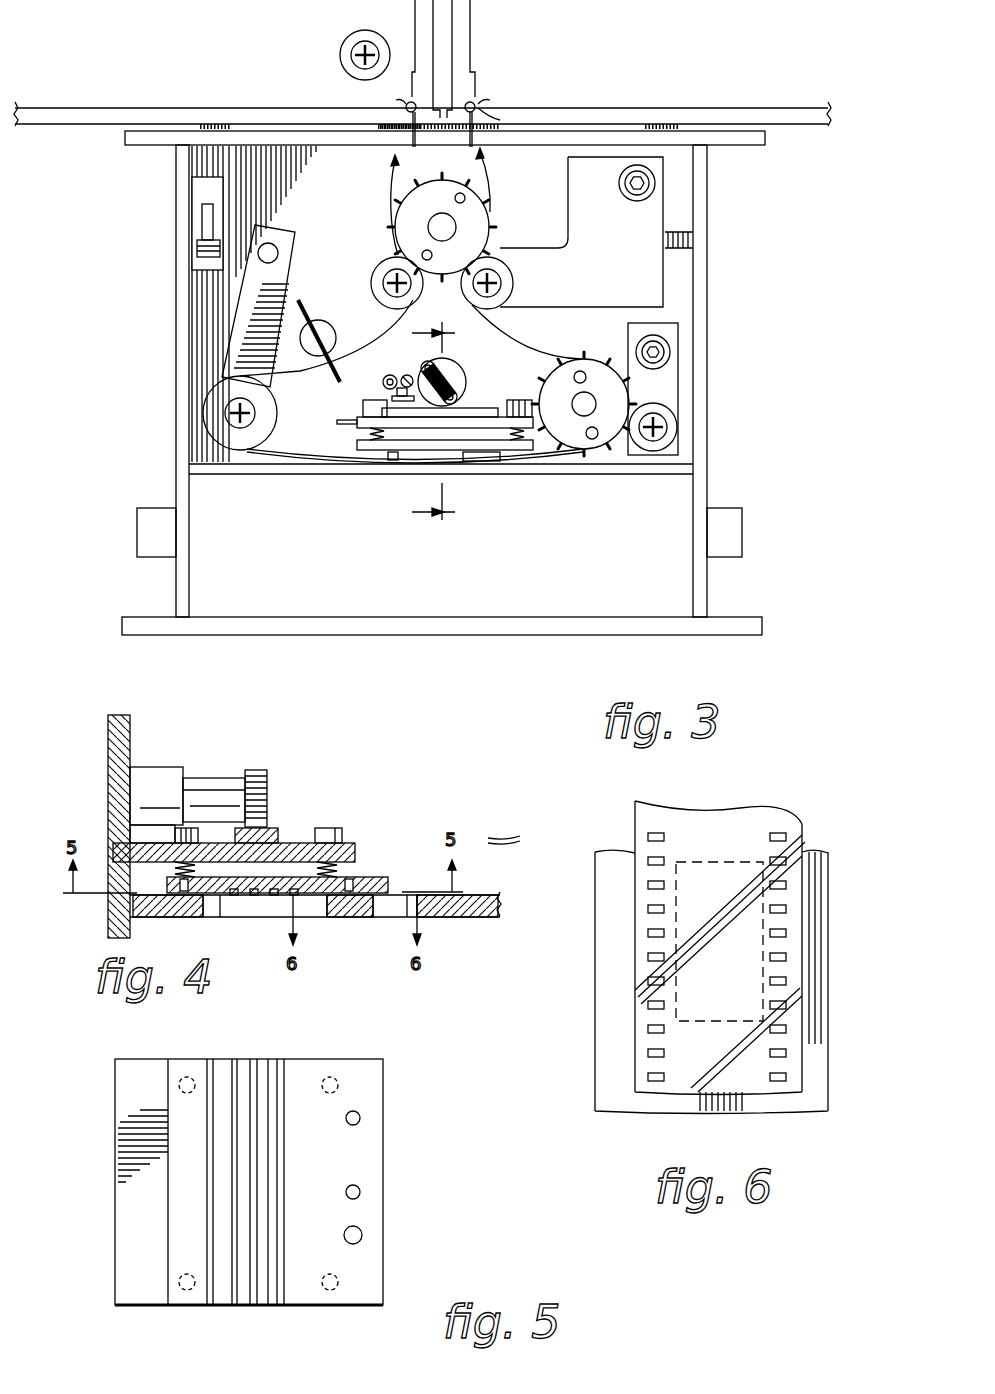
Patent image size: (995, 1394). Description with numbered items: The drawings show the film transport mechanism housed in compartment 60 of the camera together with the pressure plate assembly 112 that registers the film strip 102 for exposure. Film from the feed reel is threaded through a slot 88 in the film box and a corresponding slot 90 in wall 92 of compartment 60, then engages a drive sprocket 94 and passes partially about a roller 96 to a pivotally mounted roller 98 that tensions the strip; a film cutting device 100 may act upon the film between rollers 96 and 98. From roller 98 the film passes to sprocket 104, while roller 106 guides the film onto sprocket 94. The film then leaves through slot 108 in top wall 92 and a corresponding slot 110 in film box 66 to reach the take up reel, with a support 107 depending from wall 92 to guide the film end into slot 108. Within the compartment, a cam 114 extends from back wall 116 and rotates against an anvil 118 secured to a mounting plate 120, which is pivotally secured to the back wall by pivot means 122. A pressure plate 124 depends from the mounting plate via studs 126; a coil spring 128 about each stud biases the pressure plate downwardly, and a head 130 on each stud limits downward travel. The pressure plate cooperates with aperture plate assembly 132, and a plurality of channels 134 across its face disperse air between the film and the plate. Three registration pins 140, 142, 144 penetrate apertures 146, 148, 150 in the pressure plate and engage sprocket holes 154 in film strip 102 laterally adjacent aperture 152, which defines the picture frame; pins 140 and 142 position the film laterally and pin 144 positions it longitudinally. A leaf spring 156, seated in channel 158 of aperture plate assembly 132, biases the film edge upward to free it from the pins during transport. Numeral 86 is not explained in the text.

In FIG. 3, the compartment 60 is at (722, 320).
In FIG. 3, the film box 66 is at (797, 127).
In FIG. 3, the screw 86 is at (341, 47).
In FIG. 3, the slot 88 is at (408, 112).
In FIG. 3, the slot 90 is at (410, 143).
In FIG. 3, the wall 92 is at (556, 137).
In FIG. 3, the drive sprocket 94 is at (418, 200).
In FIG. 3, the roller 96 is at (378, 266).
In FIG. 3, the roller 98 is at (248, 440).
In FIG. 3, the film cutting device 100 is at (340, 372).
In FIG. 3, the sprocket 104 is at (573, 440).
In FIG. 3, the roller 106 is at (510, 289).
In FIG. 3, the support 107 is at (370, 352).
In FIG. 3, the slot 108 is at (500, 122).
In FIG. 3, the slot 110 is at (480, 106).
In FIG. 3, the pressure plate assembly 112 is at (476, 396).
In FIG. 4, the pressure plate assembly 112 is at (507, 830).
In FIG. 3, the cam 114 is at (470, 364).
In FIG. 4, the cam 114 is at (253, 770).
In FIG. 4, the back wall 116 is at (130, 737).
In FIG. 4, the anvil 118 is at (278, 828).
In FIG. 4, the mounting plate 120 is at (352, 847).
In FIG. 5, the mounting plate 120 is at (135, 1112).
In FIG. 4, the pivot means 122 is at (113, 850).
In FIG. 4, the pressure plate 124 is at (347, 855).
In FIG. 5, the pressure plate 124 is at (297, 1275).
In FIG. 4, the studs 126 is at (387, 877).
In FIG. 5, the studs 126 is at (180, 1077).
In FIG. 4, the coil spring 128 is at (210, 887).
In FIG. 4, the head 130 is at (317, 826).
In FIG. 4, the aperture plate assembly 132 is at (443, 908).
In FIG. 6, the aperture plate assembly 132 is at (605, 1065).
In FIG. 5, the channels 134 is at (280, 1067).
In FIG. 6, the registration pin 140 is at (788, 1004).
In FIG. 6, the registration pin 142 is at (786, 883).
In FIG. 6, the registration pin 144 is at (788, 929).
In FIG. 5, the aperture 146 is at (362, 1235).
In FIG. 5, the aperture 148 is at (360, 1117).
In FIG. 5, the aperture 150 is at (360, 1192).
In FIG. 4, the aperture 152 is at (327, 897).
In FIG. 6, the aperture 152 is at (682, 966).
In FIG. 6, the sprocket holes 154 is at (788, 1054).
In FIG. 3, the leaf spring 156 is at (483, 465).
In FIG. 4, the channel 158 is at (388, 888).
In FIG. 6, the film strip 102 is at (635, 1077).